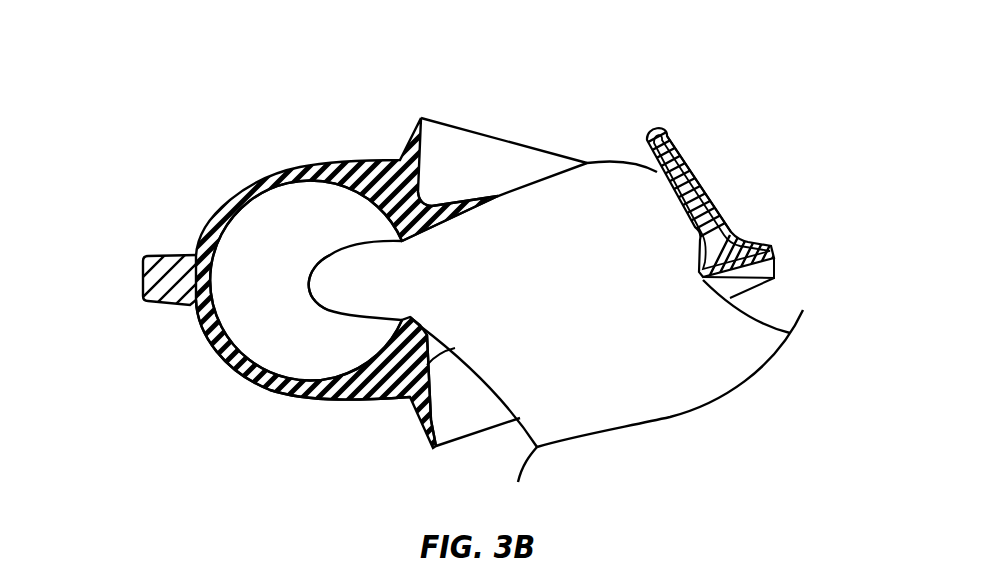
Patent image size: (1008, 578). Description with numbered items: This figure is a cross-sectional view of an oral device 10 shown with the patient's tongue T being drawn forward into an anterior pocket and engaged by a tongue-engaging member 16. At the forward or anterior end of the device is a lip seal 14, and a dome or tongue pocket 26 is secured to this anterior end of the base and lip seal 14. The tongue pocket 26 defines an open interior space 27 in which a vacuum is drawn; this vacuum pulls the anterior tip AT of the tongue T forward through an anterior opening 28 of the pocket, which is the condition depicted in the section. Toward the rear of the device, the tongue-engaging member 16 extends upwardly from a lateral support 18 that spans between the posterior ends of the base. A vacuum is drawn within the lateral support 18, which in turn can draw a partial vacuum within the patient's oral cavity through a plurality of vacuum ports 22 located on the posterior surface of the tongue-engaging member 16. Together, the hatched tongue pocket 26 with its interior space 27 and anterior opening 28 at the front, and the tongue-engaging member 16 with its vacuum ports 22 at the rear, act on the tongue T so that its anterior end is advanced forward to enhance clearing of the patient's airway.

The oral device 10 is at (238, 90).
The lip seal 14 is at (421, 120).
The tongue-engaging member 16 is at (656, 130).
The lateral support 18 is at (771, 248).
The vacuum ports 22 is at (690, 121).
The tongue pocket 26 is at (230, 364).
The interior space 27 is at (306, 281).
The anterior opening 28 is at (303, 378).
The anterior tip AT is at (311, 266).
The tongue T is at (556, 321).